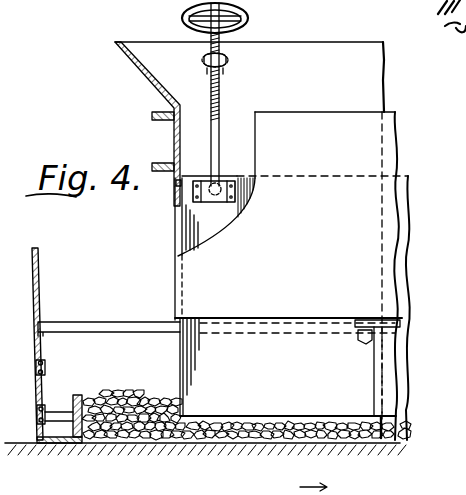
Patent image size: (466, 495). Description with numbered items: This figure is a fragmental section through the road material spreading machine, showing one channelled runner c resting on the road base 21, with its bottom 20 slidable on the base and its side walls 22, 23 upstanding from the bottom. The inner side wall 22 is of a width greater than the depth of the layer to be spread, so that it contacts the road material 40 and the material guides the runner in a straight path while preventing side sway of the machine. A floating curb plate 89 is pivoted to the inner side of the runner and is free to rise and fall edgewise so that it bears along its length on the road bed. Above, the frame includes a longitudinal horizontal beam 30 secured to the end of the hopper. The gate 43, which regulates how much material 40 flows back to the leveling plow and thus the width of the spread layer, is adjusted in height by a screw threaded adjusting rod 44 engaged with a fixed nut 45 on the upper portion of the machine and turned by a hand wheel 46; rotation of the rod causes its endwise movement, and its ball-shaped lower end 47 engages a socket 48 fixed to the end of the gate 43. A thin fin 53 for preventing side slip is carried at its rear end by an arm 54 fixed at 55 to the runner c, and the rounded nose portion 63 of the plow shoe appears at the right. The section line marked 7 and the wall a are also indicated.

The hand wheel 46 is at (249, 19).
The screw threaded adjusting rod 44 is at (219, 118).
The fixed nut 45 is at (228, 68).
The ball-shaped lower end 47 is at (222, 172).
The longitudinal horizontal beam 30 is at (167, 140).
The socket 48 is at (200, 203).
The tank wall a is at (362, 86).
The rounded nose portion 63 is at (317, 276).
The gate 43 is at (212, 232).
The arm 54 is at (128, 320).
The bottom 20 is at (46, 446).
The floating curb plate 89 is at (81, 447).
The side wall 22 is at (78, 396).
The fixing point 55 is at (47, 370).
The side wall 23 is at (37, 401).
The runner C is at (37, 413).
The road material 40 is at (154, 447).
The road base 21 is at (221, 447).
The fin 53 is at (386, 371).
The section arrow 7 is at (323, 486).